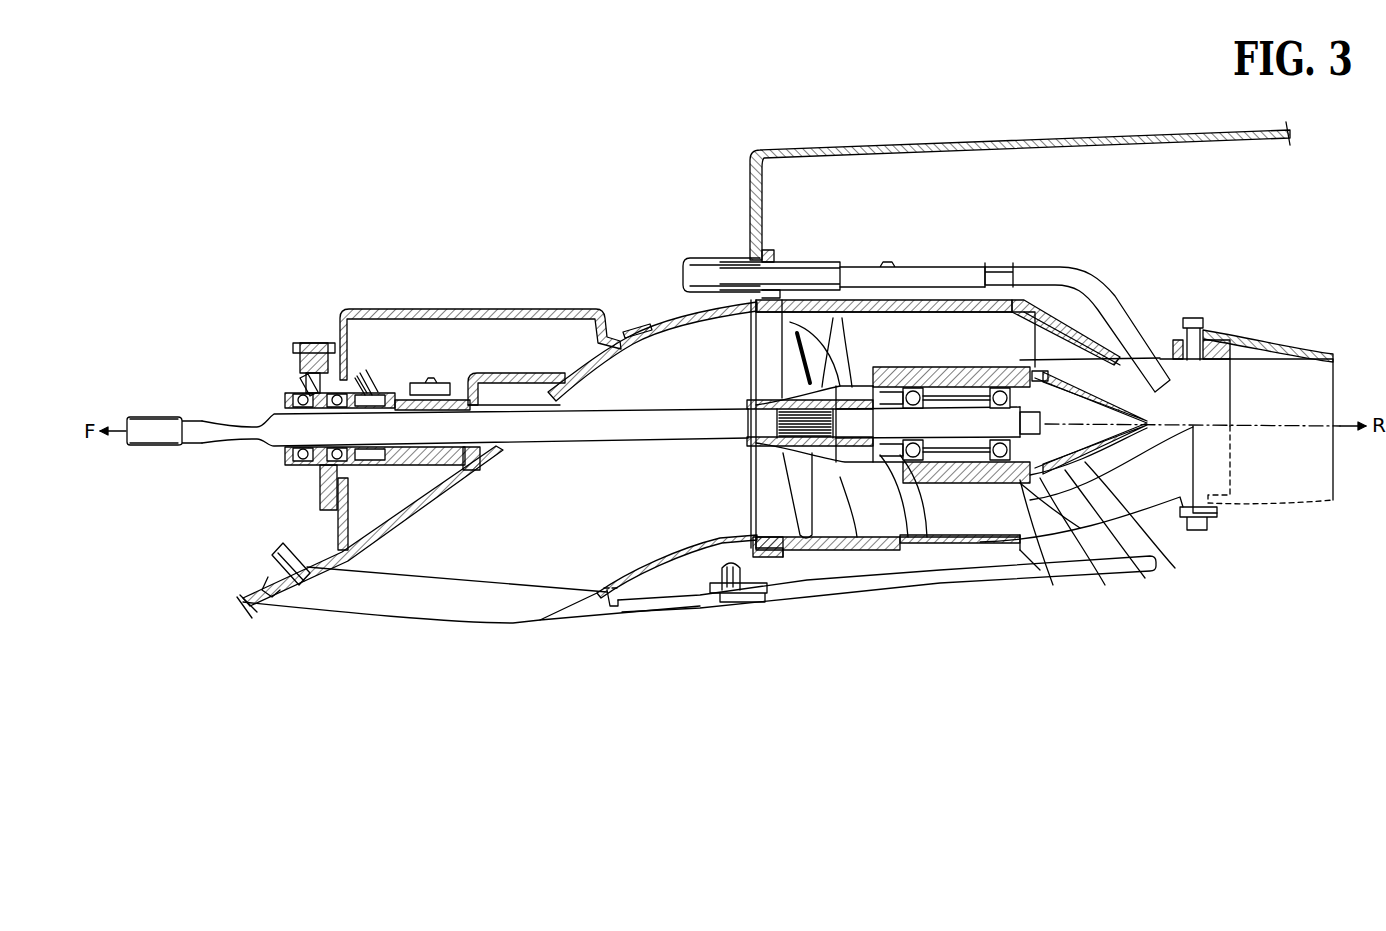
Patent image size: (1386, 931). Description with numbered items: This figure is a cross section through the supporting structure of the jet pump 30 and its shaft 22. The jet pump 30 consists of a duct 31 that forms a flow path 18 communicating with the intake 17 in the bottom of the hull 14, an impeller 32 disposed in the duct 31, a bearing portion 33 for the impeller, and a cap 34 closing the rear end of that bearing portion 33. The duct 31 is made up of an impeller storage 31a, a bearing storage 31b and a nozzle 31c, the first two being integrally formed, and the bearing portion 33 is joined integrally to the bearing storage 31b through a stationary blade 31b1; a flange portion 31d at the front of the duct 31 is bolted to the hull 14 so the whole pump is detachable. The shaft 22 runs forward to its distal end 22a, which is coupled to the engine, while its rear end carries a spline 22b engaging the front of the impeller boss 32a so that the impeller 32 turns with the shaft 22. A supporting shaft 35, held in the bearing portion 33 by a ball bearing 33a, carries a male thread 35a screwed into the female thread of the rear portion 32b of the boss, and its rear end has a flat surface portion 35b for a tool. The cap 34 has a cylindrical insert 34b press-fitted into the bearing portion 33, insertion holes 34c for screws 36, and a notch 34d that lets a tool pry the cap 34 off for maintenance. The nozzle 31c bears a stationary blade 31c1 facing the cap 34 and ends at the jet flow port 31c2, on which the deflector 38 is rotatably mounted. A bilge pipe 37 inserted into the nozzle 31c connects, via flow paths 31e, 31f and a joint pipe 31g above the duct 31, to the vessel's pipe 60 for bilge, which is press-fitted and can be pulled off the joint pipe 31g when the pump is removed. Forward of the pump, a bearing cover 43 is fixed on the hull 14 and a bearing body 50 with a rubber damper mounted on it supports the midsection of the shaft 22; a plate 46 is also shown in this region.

The hull 14 is at (668, 318).
The intake 17 is at (386, 588).
The flow path 18 is at (590, 500).
The shaft 22 is at (645, 440).
The distal end 22a is at (160, 412).
The spline 22b is at (778, 392).
The jet pump 30 is at (956, 552).
The duct 31 is at (896, 552).
The impeller storage 31a is at (802, 560).
The bearing storage 31b is at (930, 545).
The stationary blade 31b1 is at (965, 548).
The nozzle 31c is at (1145, 498).
The stationary blade 31c1 is at (1047, 333).
The jet flow port 31c2 is at (1230, 394).
The flange portion 31d is at (768, 256).
The flow path 31e is at (920, 284).
The flow path 31f is at (873, 282).
The joint pipe 31g is at (729, 260).
The impeller 32 is at (857, 505).
The boss 32a is at (782, 458).
The rear portion of the boss 32b is at (840, 320).
The bearing portion 33 is at (976, 542).
The ball bearing 33a is at (870, 548).
The cap 34 is at (1112, 542).
The insert 34b is at (1048, 525).
The insertion hole 34c is at (1038, 378).
The notch 34d is at (1120, 548).
The supporting shaft 35 is at (936, 420).
The male thread 35a is at (808, 320).
The flat surface portion 35b is at (1112, 423).
The screw 36 is at (1048, 374).
The bilge pipe 37 is at (1084, 278).
The deflector 38 is at (1280, 353).
The bearing cover 43 is at (424, 309).
The mounting plate 46 is at (575, 387).
The bearing body 50 is at (303, 486).
The pipe for bilge 60 is at (690, 258).